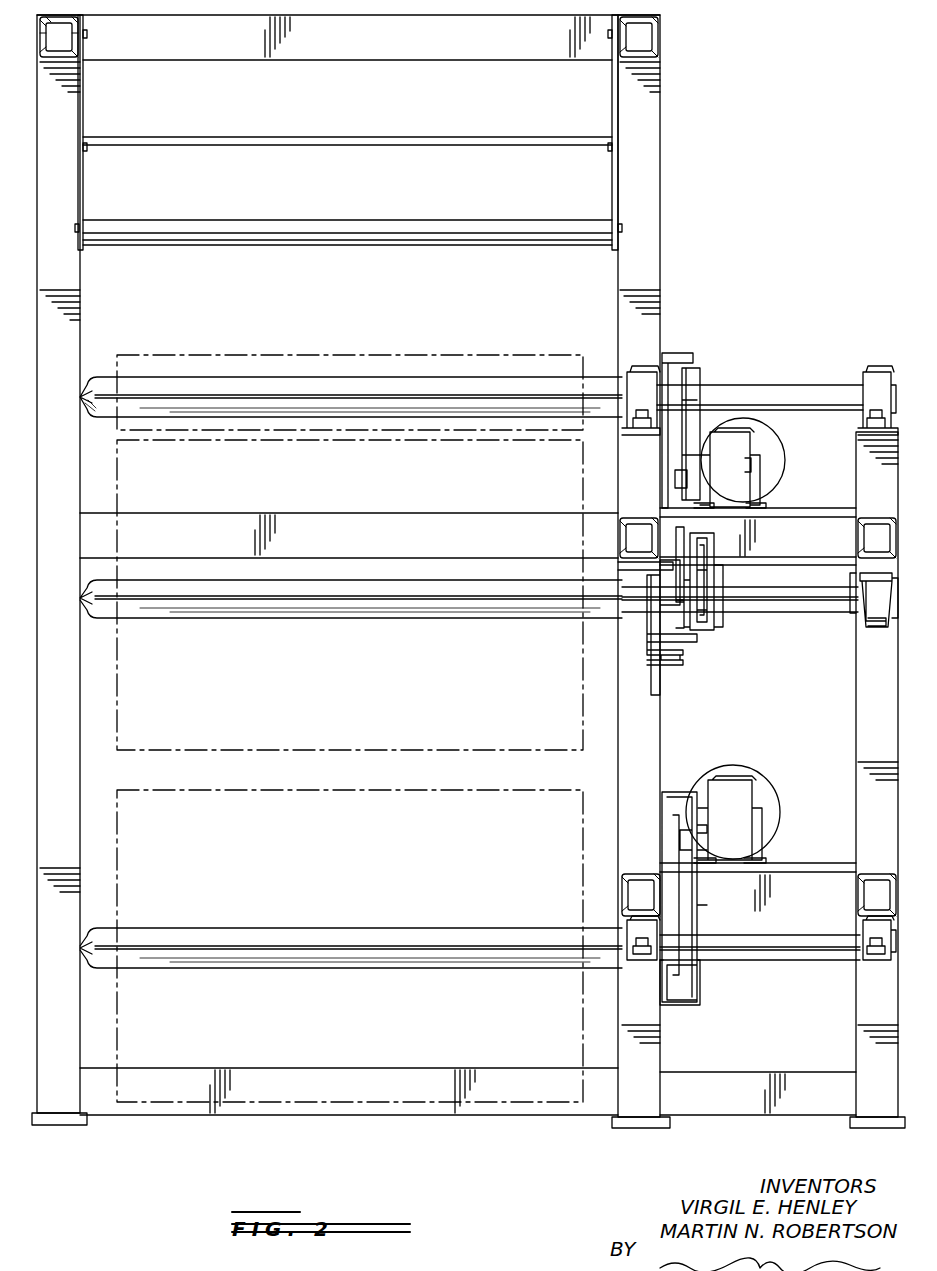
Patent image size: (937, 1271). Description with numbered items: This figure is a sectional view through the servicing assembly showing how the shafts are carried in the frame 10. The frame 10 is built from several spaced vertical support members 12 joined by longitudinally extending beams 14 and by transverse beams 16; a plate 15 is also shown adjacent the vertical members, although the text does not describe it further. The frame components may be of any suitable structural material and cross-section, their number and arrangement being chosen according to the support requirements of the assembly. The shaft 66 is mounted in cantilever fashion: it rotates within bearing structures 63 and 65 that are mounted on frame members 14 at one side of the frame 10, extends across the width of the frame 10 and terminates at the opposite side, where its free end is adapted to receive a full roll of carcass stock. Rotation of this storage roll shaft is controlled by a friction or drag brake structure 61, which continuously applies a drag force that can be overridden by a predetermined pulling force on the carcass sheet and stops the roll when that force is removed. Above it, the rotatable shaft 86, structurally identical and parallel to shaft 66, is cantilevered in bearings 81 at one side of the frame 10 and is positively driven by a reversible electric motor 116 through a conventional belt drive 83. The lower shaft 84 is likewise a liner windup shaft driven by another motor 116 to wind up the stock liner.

The frame 10 is at (57, 1029).
The vertical support members 12 is at (64, 920).
The longitudinally extending beams 14 is at (80, 50).
The vertical plate 15 is at (83, 205).
The transverse beams 16 is at (344, 48).
The friction brake structure 61 is at (687, 667).
The bearing structure 63 is at (712, 614).
The bearing structure 65 is at (862, 626).
The shaft 66 is at (180, 618).
The bearings 81 is at (640, 376).
The belt drive 83 is at (698, 404).
The shaft 84 is at (134, 938).
The rotatable shaft 86 is at (107, 385).
The reversible electric motor 116 is at (731, 467).